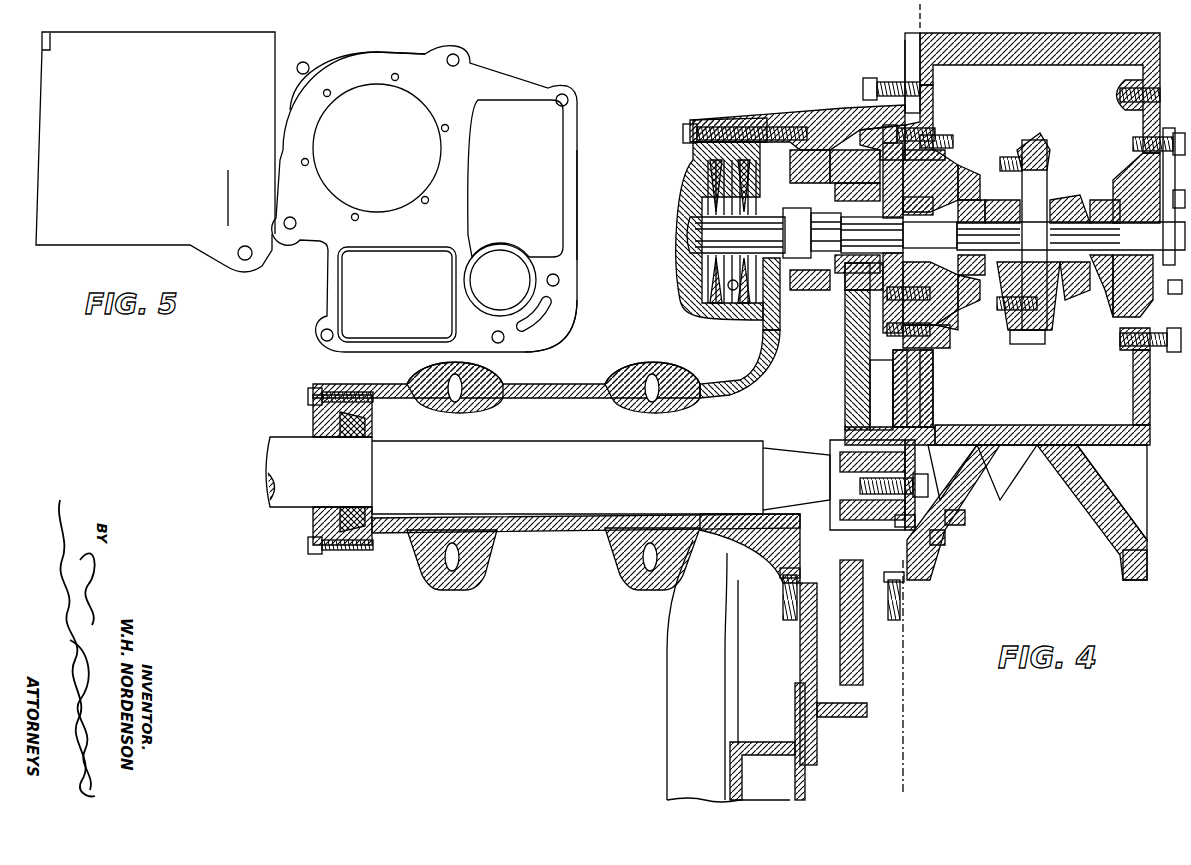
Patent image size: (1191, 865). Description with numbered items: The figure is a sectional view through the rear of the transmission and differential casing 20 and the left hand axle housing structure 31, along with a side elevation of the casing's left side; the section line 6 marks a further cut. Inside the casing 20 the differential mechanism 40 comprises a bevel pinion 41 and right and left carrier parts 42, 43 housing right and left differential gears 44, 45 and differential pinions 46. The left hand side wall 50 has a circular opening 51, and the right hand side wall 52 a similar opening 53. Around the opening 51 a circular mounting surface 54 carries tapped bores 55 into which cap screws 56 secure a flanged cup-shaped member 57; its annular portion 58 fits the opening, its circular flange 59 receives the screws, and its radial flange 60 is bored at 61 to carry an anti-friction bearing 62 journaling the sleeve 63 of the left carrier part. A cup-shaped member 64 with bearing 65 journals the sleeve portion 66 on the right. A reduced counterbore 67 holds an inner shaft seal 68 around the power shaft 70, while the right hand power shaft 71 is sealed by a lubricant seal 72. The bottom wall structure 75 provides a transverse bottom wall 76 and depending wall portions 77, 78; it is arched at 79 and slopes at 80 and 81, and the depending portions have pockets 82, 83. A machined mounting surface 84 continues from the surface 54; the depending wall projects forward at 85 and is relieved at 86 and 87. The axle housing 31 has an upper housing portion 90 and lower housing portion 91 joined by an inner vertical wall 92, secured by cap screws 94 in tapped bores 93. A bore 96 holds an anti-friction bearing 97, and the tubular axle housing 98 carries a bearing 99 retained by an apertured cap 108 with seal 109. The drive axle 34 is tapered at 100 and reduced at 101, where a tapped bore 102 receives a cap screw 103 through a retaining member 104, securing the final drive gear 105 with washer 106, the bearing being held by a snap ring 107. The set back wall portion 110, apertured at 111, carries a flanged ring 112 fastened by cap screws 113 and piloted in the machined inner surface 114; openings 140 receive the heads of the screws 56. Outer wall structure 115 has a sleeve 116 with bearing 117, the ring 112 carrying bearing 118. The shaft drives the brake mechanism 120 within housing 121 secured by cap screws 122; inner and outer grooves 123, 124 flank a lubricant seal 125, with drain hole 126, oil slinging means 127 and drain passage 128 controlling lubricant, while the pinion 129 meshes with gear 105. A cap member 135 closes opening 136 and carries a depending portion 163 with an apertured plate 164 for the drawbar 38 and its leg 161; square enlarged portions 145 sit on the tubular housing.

In FIG. 4, the section line 6 is at (880, 782).
In FIG. 5, the transmission and differential casing 20 is at (104, 240).
In FIG. 4, the transmission and differential casing 20 is at (1065, 407).
In FIG. 4, the left hand axle housing structure 31 is at (558, 540).
In FIG. 4, the left hand drive axle 34 is at (277, 457).
In FIG. 4, the drawbar 38 is at (676, 707).
In FIG. 4, the differential mechanism 40 is at (1053, 136).
In FIG. 4, the bevel pinion 41 is at (1032, 335).
In FIG. 4, the right hand carrier part 42 is at (1063, 293).
In FIG. 4, the left hand carrier part 43 is at (1000, 323).
In FIG. 4, the right hand differential gear 44 is at (1078, 212).
In FIG. 4, the left hand differential gear 45 is at (990, 190).
In FIG. 4, the differential pinions 46 is at (1060, 203).
In FIG. 5, the left hand side wall 50 is at (402, 46).
In FIG. 4, the left hand side wall 50 is at (912, 55).
In FIG. 5, the circular opening 51 is at (318, 118).
In FIG. 4, the circular opening 51 is at (953, 156).
In FIG. 4, the right hand side wall 52 is at (1152, 66).
In FIG. 4, the circular opening 53 is at (1153, 170).
In FIG. 5, the circular mounting surface 54 is at (345, 50).
In FIG. 4, the circular mounting surface 54 is at (893, 72).
In FIG. 5, the tapped bores 55 is at (303, 160).
In FIG. 4, the cap screws 56 is at (927, 350).
In FIG. 4, the flanged cup-shaped member 57 is at (957, 150).
In FIG. 4, the annular portion 58 is at (935, 330).
In FIG. 4, the circular flange 59 is at (930, 370).
In FIG. 4, the radial flange 60 is at (950, 300).
In FIG. 4, the bore 61 is at (968, 176).
In FIG. 4, the anti-friction bearing 62 is at (962, 268).
In FIG. 4, the sleeve 63 is at (975, 205).
In FIG. 4, the cup-shaped member 64 is at (1120, 328).
In FIG. 4, the bearing 65 is at (1130, 197).
In FIG. 4, the sleeve portion 66 is at (1067, 280).
In FIG. 4, the reduced counterbore 67 is at (953, 287).
In FIG. 4, the inner shaft seal 68 is at (958, 150).
In FIG. 4, the power shaft 70 is at (695, 237).
In FIG. 4, the right hand power shaft 71 is at (1163, 237).
In FIG. 4, the lubricant seal 72 is at (1133, 265).
In FIG. 4, the bottom wall structure 75 is at (1052, 467).
In FIG. 4, the transverse bottom wall 76 is at (1005, 425).
In FIG. 4, the right hand depending wall portion 77 is at (1125, 578).
In FIG. 5, the left hand depending wall portion 78 is at (573, 306).
In FIG. 4, the left hand depending wall portion 78 is at (930, 562).
In FIG. 4, the arched portion 79 is at (1030, 455).
In FIG. 4, the sloping portion 80 is at (1088, 509).
In FIG. 4, the sloping portion 81 is at (943, 517).
In FIG. 4, the pocket 82 is at (1130, 478).
In FIG. 5, the pocket 83 is at (512, 277).
In FIG. 4, the pocket 83 is at (964, 482).
In FIG. 5, the machined mounting surface 84 is at (573, 182).
In FIG. 5, the forward projection 85 is at (333, 298).
In FIG. 5, the recess 86 is at (393, 330).
In FIG. 5, the recess 87 is at (540, 322).
In FIG. 4, the recess 87 is at (910, 583).
In FIG. 4, the upper housing portion 90 is at (800, 112).
In FIG. 4, the lower housing portion 91 is at (748, 560).
In FIG. 4, the inner vertical wall 92 is at (927, 407).
In FIG. 5, the tapped bores 93 is at (321, 336).
In FIG. 4, the cap screws 94 is at (866, 82).
In FIG. 4, the bore 96 is at (905, 520).
In FIG. 4, the anti-friction bearing 97 is at (842, 548).
In FIG. 4, the tubular axle housing 98 is at (528, 533).
In FIG. 4, the anti-friction bearing 99 is at (368, 418).
In FIG. 4, the tapered portion 100 is at (793, 430).
In FIG. 4, the reduced portion 101 is at (907, 458).
In FIG. 4, the axial tapped bore 102 is at (858, 470).
In FIG. 4, the cap screw 103 is at (930, 488).
In FIG. 4, the retaining member 104 is at (908, 505).
In FIG. 4, the final drive gear 105 is at (853, 383).
In FIG. 4, the washer 106 is at (898, 406).
In FIG. 4, the snap ring 107 is at (937, 535).
In FIG. 4, the apertured cap 108 is at (315, 412).
In FIG. 4, the lubricant and dirt seal 109 is at (317, 522).
In FIG. 4, the set back wall portion 110 is at (890, 165).
In FIG. 4, the aperture 111 is at (900, 195).
In FIG. 4, the flanged ring 112 is at (870, 187).
In FIG. 4, the cap screws 113 is at (948, 318).
In FIG. 4, the machined inner surface 114 is at (955, 335).
In FIG. 4, the outer wall structure 115 is at (768, 343).
In FIG. 4, the sleeve 116 is at (797, 183).
In FIG. 4, the anti-friction bearing 117 is at (820, 285).
In FIG. 4, the anti-friction bearing 118 is at (899, 293).
In FIG. 4, the brake mechanism 120 is at (727, 284).
In FIG. 4, the cup-shaped housing 121 is at (730, 118).
In FIG. 4, the cap screws 122 is at (683, 133).
In FIG. 4, the inner annular groove 123 is at (820, 183).
In FIG. 4, the outer annular groove 124 is at (783, 285).
In FIG. 4, the lubricant seal 125 is at (835, 300).
In FIG. 4, the drain hole 126 is at (825, 290).
In FIG. 4, the oil slinging means 127 is at (812, 254).
In FIG. 4, the drain passage 128 is at (765, 328).
In FIG. 4, the pinion 129 is at (862, 220).
In FIG. 4, the cap member 135 is at (799, 657).
In FIG. 4, the opening 136 is at (800, 590).
In FIG. 4, the openings 140 is at (890, 350).
In FIG. 4, the enlarged portions 145 is at (637, 597).
In FIG. 4, the drawbar leg 161 is at (666, 675).
In FIG. 4, the depending portion 163 is at (813, 752).
In FIG. 4, the apertured plate 164 is at (805, 788).